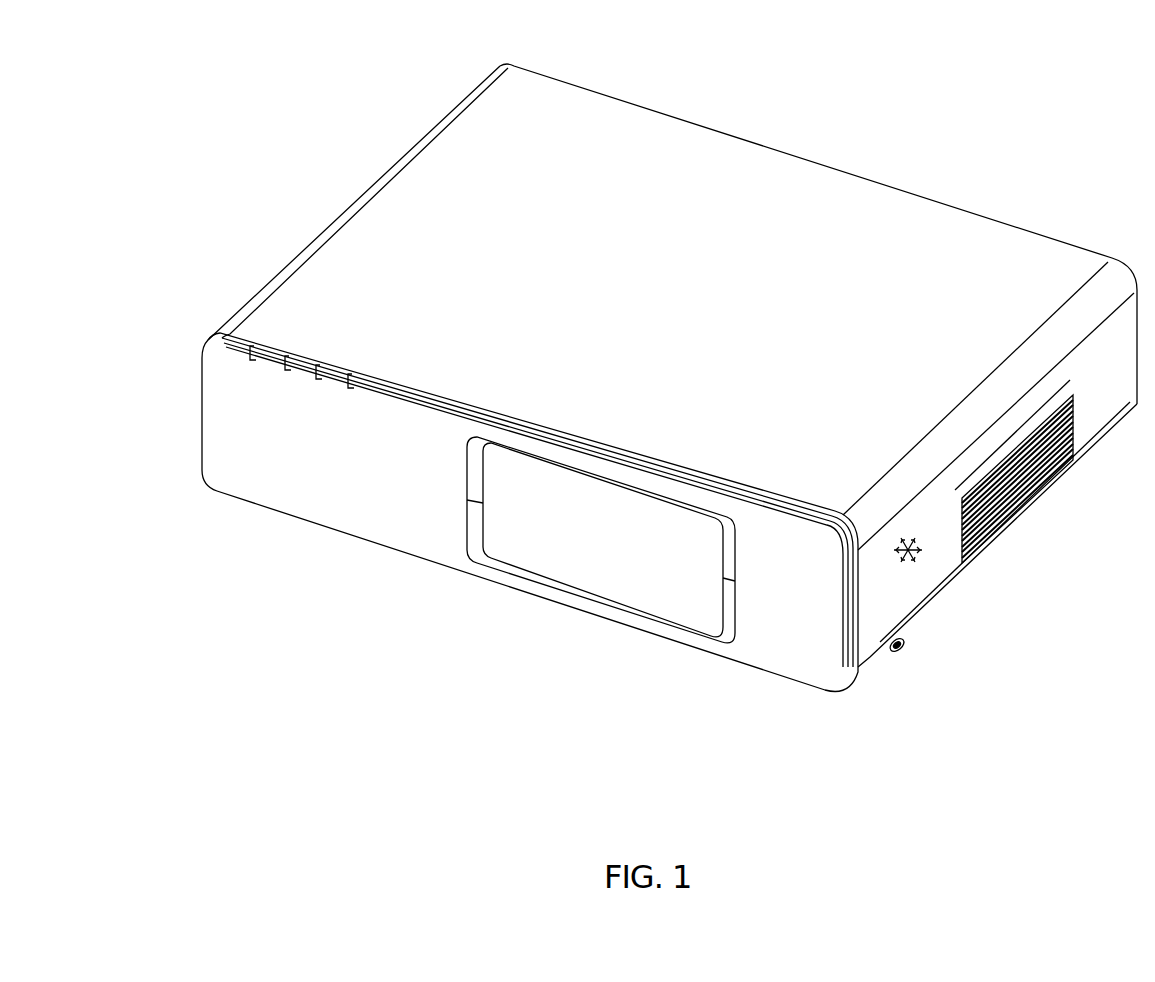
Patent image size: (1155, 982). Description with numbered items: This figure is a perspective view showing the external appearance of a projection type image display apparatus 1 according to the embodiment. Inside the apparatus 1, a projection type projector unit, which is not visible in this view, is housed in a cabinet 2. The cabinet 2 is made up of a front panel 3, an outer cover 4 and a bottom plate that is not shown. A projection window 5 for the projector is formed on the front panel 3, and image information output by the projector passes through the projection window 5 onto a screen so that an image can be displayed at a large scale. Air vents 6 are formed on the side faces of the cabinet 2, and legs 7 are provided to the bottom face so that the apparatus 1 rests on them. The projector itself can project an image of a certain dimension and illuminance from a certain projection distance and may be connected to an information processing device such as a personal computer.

The projection type image display apparatus 1 is at (872, 180).
The cabinet 2 is at (1122, 742).
The front panel 3 is at (367, 527).
The outer cover 4 is at (920, 587).
The projection window 5 is at (585, 572).
The air vents 6 is at (1032, 493).
The legs 7 is at (903, 650).